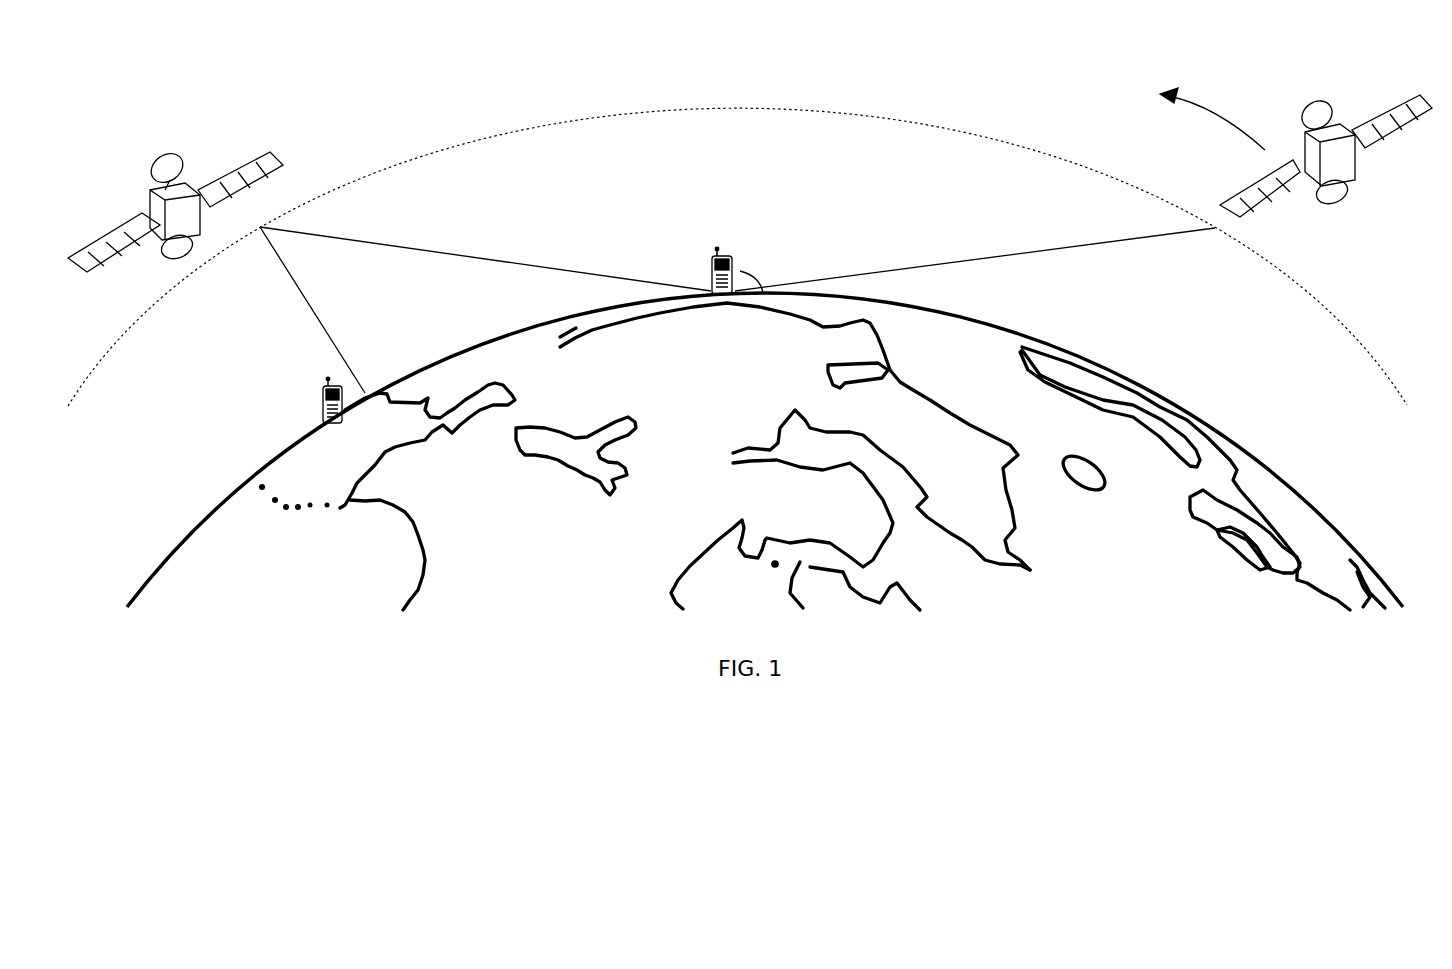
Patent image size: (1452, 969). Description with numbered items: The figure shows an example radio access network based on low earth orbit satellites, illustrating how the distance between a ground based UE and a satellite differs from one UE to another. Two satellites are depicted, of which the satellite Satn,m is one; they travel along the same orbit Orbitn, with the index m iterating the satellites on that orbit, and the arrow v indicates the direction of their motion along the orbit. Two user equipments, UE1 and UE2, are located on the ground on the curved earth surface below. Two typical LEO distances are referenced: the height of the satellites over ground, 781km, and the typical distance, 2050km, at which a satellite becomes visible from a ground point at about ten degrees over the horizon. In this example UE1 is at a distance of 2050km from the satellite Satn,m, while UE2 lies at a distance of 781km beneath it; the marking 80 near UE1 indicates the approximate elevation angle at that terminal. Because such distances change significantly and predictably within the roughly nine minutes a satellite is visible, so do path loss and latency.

The satellite Satn,m is at (175, 188).
The user equipment UE1 is at (697, 270).
The user equipment UE2 is at (305, 400).
The orbit Orbitn is at (746, 257).
The satellite velocity v is at (1212, 117).
The satellite visibility distance 2050km is at (737, 259).
The satellite height over ground 781km is at (283, 310).
The elevation angle 80 is at (768, 279).